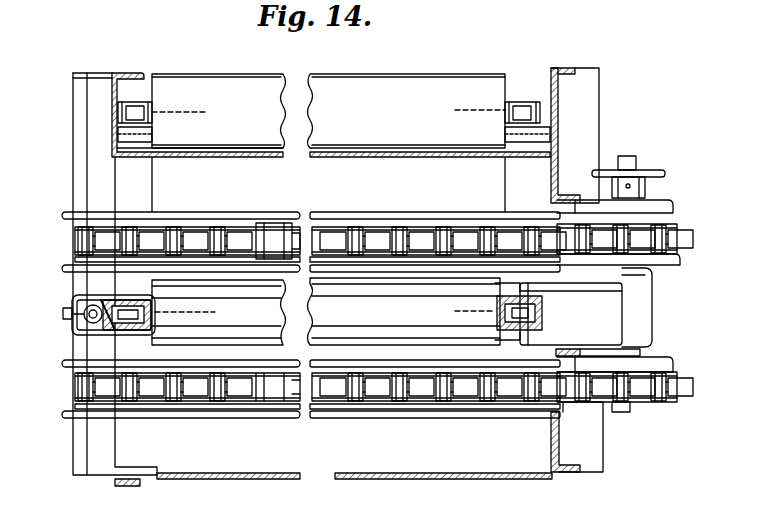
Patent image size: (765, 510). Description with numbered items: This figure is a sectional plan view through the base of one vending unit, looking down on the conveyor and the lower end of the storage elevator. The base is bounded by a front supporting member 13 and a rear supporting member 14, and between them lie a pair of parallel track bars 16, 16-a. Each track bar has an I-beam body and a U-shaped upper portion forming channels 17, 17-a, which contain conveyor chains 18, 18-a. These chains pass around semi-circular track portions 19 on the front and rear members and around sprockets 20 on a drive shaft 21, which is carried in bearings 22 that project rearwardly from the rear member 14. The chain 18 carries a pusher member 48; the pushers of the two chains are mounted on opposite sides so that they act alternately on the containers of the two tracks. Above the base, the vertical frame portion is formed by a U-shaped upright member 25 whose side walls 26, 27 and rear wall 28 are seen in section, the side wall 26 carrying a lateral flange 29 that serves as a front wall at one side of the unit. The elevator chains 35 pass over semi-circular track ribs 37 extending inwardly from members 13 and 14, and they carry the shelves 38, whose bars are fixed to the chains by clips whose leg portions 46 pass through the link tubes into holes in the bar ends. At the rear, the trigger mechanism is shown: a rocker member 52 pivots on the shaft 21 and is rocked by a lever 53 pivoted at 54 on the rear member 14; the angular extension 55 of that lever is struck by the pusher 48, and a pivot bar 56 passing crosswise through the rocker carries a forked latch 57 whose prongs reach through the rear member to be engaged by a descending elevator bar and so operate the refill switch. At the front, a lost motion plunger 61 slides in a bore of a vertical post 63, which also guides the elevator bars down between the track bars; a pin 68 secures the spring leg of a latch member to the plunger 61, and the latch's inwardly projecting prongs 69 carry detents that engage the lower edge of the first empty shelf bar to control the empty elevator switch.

The front supporting member 13 is at (73, 453).
The rear supporting member 14 is at (604, 446).
The track bar 16 is at (206, 227).
The track bar 16-a is at (204, 403).
The channel 17 is at (234, 230).
The channel 17-a is at (289, 401).
The conveyor chain 18 is at (355, 227).
The conveyor chain 18-a is at (362, 401).
The semi-circular track portion 19 is at (100, 215).
The sprocket 20 is at (672, 240).
The drive shaft 21 is at (632, 157).
The bearing 22 is at (660, 200).
The U-shaped upright member 25 is at (446, 465).
The side wall 26 is at (247, 156).
The side wall 27 is at (246, 473).
The rear wall 28 is at (551, 450).
The lateral flange 29 is at (112, 98).
The endless elevator chain 35 is at (140, 102).
The semi-circular track rib 37 is at (150, 173).
The shelf 38 is at (401, 73).
The leg portion 46 is at (458, 113).
The pusher member 48 is at (277, 223).
The rocker member 52 is at (653, 321).
The lever 53 is at (575, 265).
The pivot 54 is at (590, 196).
The angular extension 55 is at (676, 256).
The pivot bar 56 is at (598, 358).
The forked latch 57 is at (615, 296).
The lost motion plunger 61 is at (84, 321).
The vertical post 63 is at (110, 331).
The pin 68 is at (63, 313).
The prong 69 is at (100, 299).